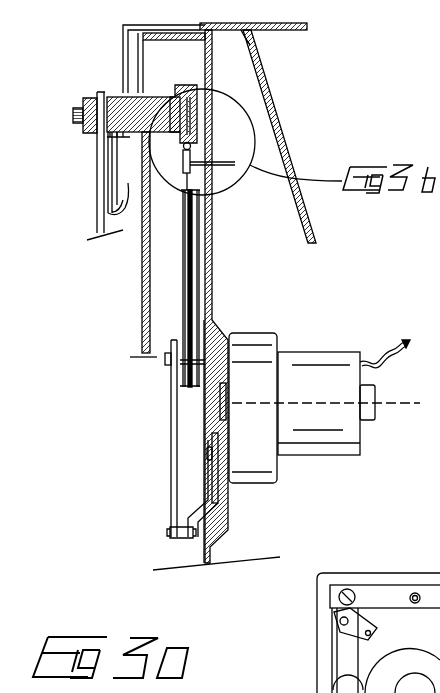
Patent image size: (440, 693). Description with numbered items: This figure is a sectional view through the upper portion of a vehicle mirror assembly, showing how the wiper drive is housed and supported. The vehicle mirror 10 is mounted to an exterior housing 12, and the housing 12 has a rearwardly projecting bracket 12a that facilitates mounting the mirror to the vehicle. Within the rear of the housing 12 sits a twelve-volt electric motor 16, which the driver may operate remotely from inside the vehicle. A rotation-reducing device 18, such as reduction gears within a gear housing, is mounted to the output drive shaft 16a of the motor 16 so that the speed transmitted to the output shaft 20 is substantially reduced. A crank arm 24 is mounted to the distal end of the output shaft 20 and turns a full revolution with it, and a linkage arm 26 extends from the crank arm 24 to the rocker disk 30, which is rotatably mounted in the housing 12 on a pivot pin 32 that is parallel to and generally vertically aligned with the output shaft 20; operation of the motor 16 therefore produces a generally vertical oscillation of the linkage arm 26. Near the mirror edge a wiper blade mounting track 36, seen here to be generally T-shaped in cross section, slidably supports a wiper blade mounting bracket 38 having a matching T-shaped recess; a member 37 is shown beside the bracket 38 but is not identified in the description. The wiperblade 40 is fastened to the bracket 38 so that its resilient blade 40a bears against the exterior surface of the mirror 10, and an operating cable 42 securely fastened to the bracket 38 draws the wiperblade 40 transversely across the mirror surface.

The vehicle mirror 10 is at (142, 255).
The exterior housing 12 is at (270, 103).
The rearwardly projecting brackets 12a is at (292, 30).
The electric motor 16 is at (321, 380).
The output drive shaft 16a is at (220, 403).
The rotation-reducing device 18 is at (262, 352).
The output shaft 20 is at (207, 453).
The crank arm 24 is at (213, 507).
The linkage arm 26 is at (170, 422).
The rocker disk 30 is at (197, 262).
The pivot pin 32 is at (168, 360).
The wiper blade mounting track 36 is at (203, 105).
The tube 37 is at (132, 92).
The wiper blade mounting bracket 38 is at (128, 97).
The wiperblade 40 is at (107, 193).
The resilient blade 40a is at (133, 205).
The operating cable 42 is at (192, 180).